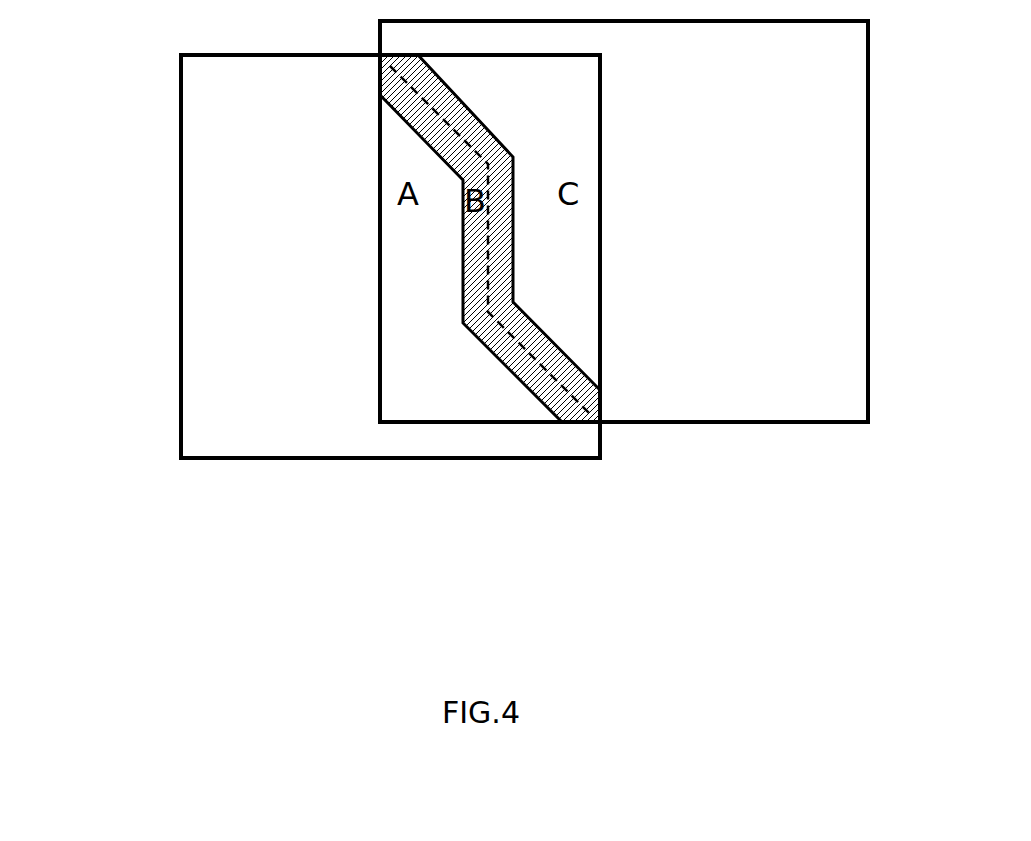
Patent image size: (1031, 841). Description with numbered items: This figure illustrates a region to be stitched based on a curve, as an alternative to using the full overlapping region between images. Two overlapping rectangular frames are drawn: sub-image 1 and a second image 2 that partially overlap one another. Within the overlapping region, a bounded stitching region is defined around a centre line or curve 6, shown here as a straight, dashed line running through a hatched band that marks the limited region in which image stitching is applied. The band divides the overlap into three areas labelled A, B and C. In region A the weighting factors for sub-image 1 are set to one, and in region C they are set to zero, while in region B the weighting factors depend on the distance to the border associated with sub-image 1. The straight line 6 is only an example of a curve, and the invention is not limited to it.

The sub-image 1 is at (181, 232).
The second member / second layer region 2 is at (868, 302).
The centre line or curve 6 is at (493, 405).